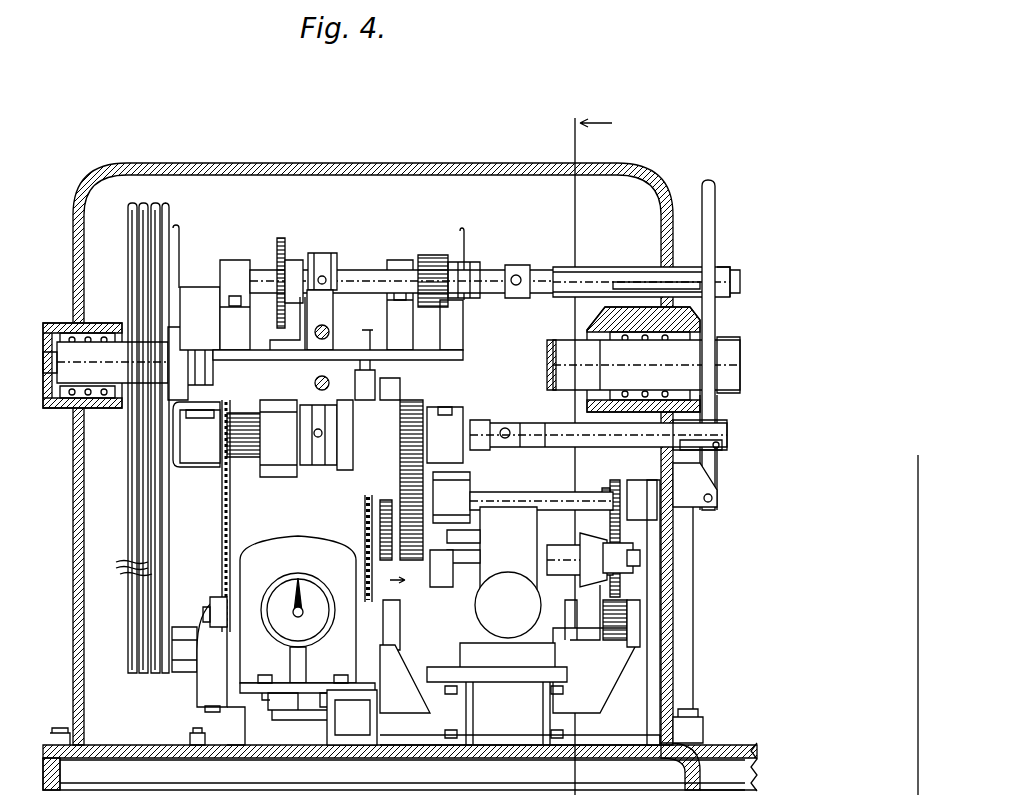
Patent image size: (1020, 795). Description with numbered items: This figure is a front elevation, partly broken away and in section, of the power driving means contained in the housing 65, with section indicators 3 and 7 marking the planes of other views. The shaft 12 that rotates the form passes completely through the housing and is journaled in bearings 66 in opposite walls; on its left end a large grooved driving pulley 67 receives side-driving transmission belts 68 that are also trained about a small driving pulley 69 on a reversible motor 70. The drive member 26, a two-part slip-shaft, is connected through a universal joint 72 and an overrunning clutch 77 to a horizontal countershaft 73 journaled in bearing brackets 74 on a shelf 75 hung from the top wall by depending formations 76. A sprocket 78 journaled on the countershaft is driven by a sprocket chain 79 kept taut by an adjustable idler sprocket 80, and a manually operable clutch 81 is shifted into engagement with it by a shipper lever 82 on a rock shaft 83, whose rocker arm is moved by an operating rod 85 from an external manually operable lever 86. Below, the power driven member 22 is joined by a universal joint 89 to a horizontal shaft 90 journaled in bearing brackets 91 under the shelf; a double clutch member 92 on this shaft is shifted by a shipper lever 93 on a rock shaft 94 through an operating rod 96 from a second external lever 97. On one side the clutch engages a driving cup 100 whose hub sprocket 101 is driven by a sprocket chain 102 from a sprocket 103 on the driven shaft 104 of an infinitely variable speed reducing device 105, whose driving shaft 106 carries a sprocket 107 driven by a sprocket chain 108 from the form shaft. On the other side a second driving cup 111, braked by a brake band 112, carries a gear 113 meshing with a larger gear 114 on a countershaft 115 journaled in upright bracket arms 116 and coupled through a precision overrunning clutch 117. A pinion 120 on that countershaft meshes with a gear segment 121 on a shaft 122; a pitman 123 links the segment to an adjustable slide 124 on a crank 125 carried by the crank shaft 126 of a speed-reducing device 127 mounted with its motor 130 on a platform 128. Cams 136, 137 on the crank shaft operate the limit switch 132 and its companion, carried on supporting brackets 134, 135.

The section line 3 is at (579, 456).
The section line 7 is at (396, 644).
The shaft 12 is at (122, 335).
The power driven member 22 is at (556, 447).
The drive member 26 is at (634, 272).
The housing 65 is at (350, 165).
The bearings 66 is at (70, 408).
The driving pulley 67 is at (128, 472).
The transmission belts 68 is at (123, 566).
The driving pulley 69 is at (128, 662).
The reversible motor 70 is at (205, 685).
The universal joint 72 is at (512, 266).
The countershaft 73 is at (353, 268).
The bearing brackets 74 is at (238, 262).
The shelf 75 is at (458, 353).
The depending formations 76 is at (188, 290).
The overrunning clutch 77 is at (434, 255).
The sprocket 78 is at (295, 260).
The sprocket chain 79 is at (279, 240).
The adjustable idler sprocket 80 is at (296, 328).
The manually operable clutch 81 is at (320, 253).
The shipper lever 82 is at (330, 310).
The rock shaft 83 is at (330, 330).
The operating rod 85 is at (616, 276).
The manually operable lever 86 is at (714, 234).
The universal joint 89 is at (513, 420).
The horizontal shaft 90 is at (180, 470).
The bearing brackets 91 is at (196, 455).
The double clutch member 92 is at (312, 468).
The shipper lever 93 is at (340, 470).
The rock shaft 94 is at (315, 382).
The operating rod 96 is at (610, 447).
The manually operable lever 97 is at (718, 408).
The driving cup 100 is at (275, 478).
The sprocket 101 is at (222, 490).
The sprocket chain 102 is at (222, 530).
The sprocket 103 is at (215, 597).
The driven shaft 104 is at (204, 612).
The speed reducing device 105 is at (285, 550).
The driving shaft 106 is at (404, 607).
The sprocket 107 is at (390, 632).
The sprocket chain 108 is at (364, 515).
The second driving cup 111 is at (392, 400).
The brake band 112 is at (356, 392).
The gear 113 is at (412, 420).
The gear 114 is at (378, 535).
The countershaft 115 is at (548, 500).
The upright bracket arms 116 is at (380, 711).
The overrunning clutch 117 is at (470, 476).
The pinion 120 is at (610, 478).
The gear segment 121 is at (640, 578).
The shaft 122 is at (600, 640).
The pitman 123 is at (633, 548).
The slide 124 is at (596, 580).
The crank 125 is at (580, 606).
The crank shaft 126 is at (553, 555).
The speed-reducing device 127 is at (508, 550).
The platform 128 is at (513, 676).
The motor 130 is at (552, 645).
The limit switch 132 is at (480, 541).
The supporting bracket 134 is at (458, 617).
The supporting bracket 135 is at (440, 680).
The cam 136 is at (476, 558).
The cam 137 is at (440, 560).